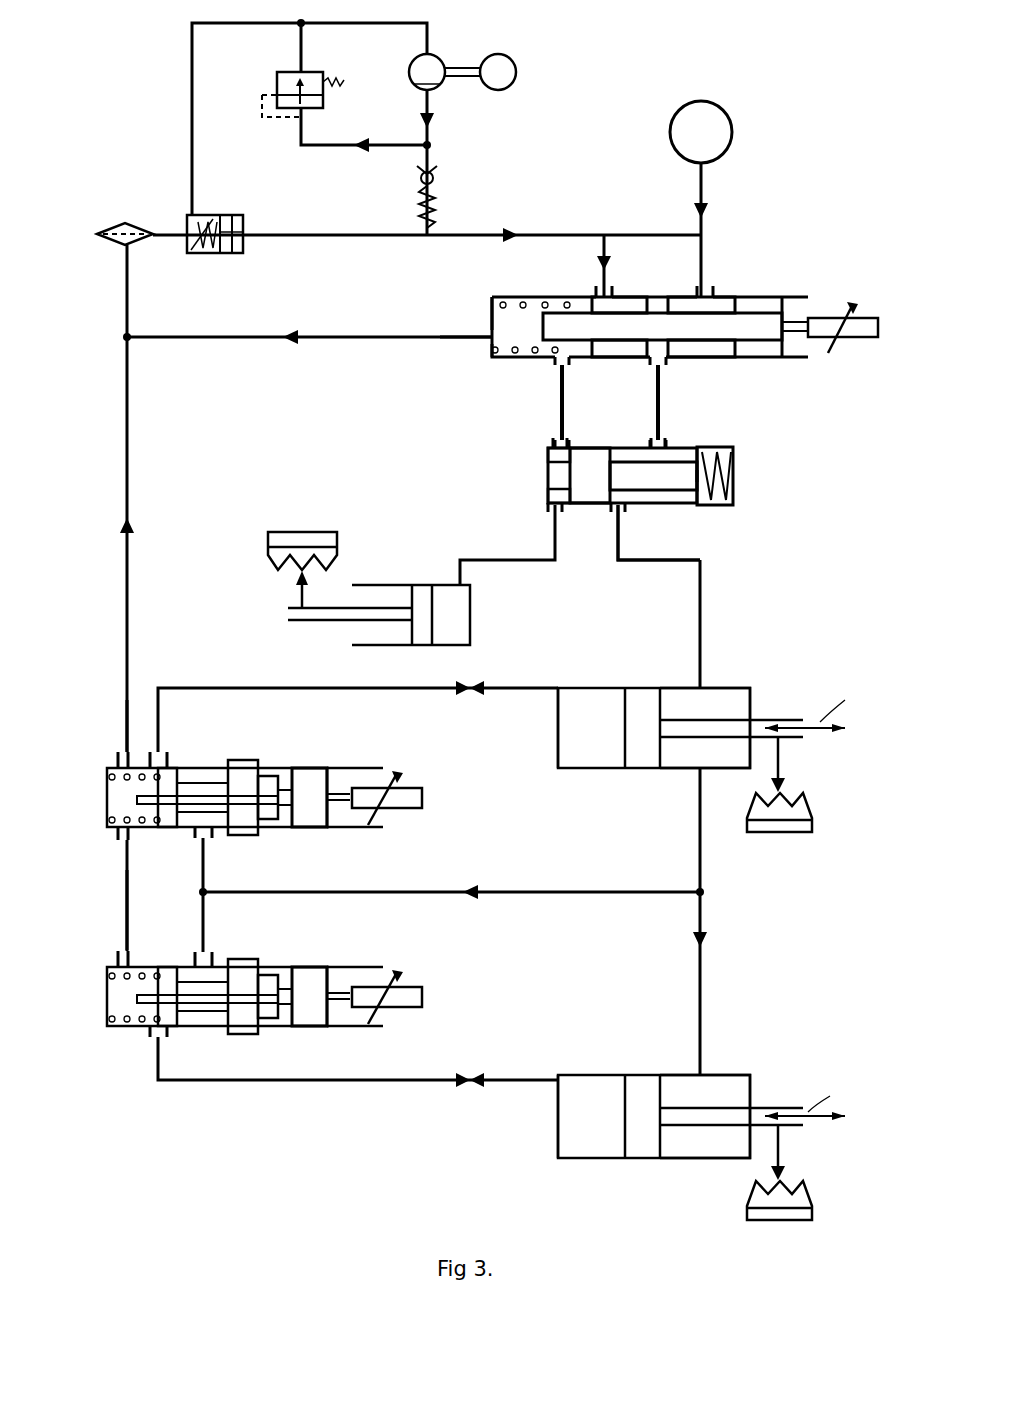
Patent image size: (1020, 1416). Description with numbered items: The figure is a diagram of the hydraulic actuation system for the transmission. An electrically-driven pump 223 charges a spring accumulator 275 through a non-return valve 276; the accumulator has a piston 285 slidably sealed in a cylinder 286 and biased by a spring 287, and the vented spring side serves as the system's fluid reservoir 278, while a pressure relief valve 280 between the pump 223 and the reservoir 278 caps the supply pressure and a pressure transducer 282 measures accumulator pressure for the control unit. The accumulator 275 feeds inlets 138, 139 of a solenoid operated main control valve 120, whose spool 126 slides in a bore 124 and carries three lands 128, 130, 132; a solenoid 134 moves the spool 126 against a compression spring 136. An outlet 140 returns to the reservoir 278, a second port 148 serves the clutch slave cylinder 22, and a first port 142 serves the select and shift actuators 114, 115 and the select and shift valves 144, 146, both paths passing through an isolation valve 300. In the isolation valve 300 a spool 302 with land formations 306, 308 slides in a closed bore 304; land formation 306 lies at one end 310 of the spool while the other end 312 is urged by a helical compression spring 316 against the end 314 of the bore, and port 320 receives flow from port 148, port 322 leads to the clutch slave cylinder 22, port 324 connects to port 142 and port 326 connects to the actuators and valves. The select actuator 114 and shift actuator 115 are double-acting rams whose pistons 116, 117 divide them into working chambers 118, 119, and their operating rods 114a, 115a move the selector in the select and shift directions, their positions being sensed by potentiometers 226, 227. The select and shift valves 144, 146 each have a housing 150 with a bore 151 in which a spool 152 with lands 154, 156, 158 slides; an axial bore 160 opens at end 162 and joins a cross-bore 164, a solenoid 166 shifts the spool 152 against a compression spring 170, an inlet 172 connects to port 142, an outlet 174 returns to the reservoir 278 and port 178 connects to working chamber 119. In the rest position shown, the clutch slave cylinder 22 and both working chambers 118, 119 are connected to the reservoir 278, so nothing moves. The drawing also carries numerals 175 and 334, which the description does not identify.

The clutch slave cylinder 22 is at (455, 632).
The select actuator 114 is at (556, 1112).
The operating rod 114a is at (707, 1120).
The shift actuator 115 is at (556, 722).
The operating rod 115a is at (735, 725).
The piston 116 is at (635, 1152).
The piston 117 is at (640, 770).
The working chamber 118 is at (705, 692).
The working chamber 119 is at (575, 768).
The main control valve 120 is at (797, 270).
The bore 124 is at (722, 296).
The spool 126 is at (792, 300).
The land 128 is at (738, 355).
The land 130 is at (690, 346).
The land 132 is at (548, 302).
The solenoid 134 is at (845, 342).
The compression spring 136 is at (505, 358).
The inlet 138 is at (598, 290).
The inlet 139 is at (708, 290).
The outlet 140 is at (488, 328).
The first port 142 is at (660, 374).
The select valve 144 is at (330, 967).
The shift valve 146 is at (330, 768).
The second port 148 is at (567, 372).
The housing 150 is at (345, 770).
The bore 151 is at (118, 814).
The spool 152 is at (332, 805).
The land 154 is at (290, 790).
The land 156 is at (250, 770).
The land 158 is at (175, 780).
The axial bore 160 is at (135, 792).
The end 162 is at (135, 803).
The cross-bore 164 is at (282, 785).
The solenoid 166 is at (412, 790).
The compression spring 170 is at (122, 770).
The inlet 172 is at (208, 838).
The outlet 174 is at (125, 752).
The port 175 is at (117, 838).
The port 178 is at (165, 762).
The pump 223 is at (435, 62).
The potentiometer 226 is at (755, 1205).
The potentiometer 227 is at (790, 835).
The spring accumulator 275 is at (218, 254).
The non-return valve 276 is at (440, 196).
The fluid reservoir 278 is at (190, 224).
The pressure relief valve 280 is at (278, 80).
The pressure transducer 282 is at (720, 130).
The piston 285 is at (228, 222).
The cylinder 286 is at (245, 252).
The spring 287 is at (195, 250).
The isolation valve 300 is at (732, 456).
The spool 302 is at (625, 482).
The closed bore 304 is at (735, 468).
The land formation 306 is at (690, 500).
The land formation 308 is at (592, 448).
The end 310 is at (700, 492).
The end 312 is at (548, 480).
The end 314 is at (548, 462).
The helical compression spring 316 is at (735, 484).
The port 320 is at (550, 446).
The port 322 is at (550, 510).
The port 324 is at (665, 442).
The port 326 is at (612, 522).
The tank 334 is at (294, 568).